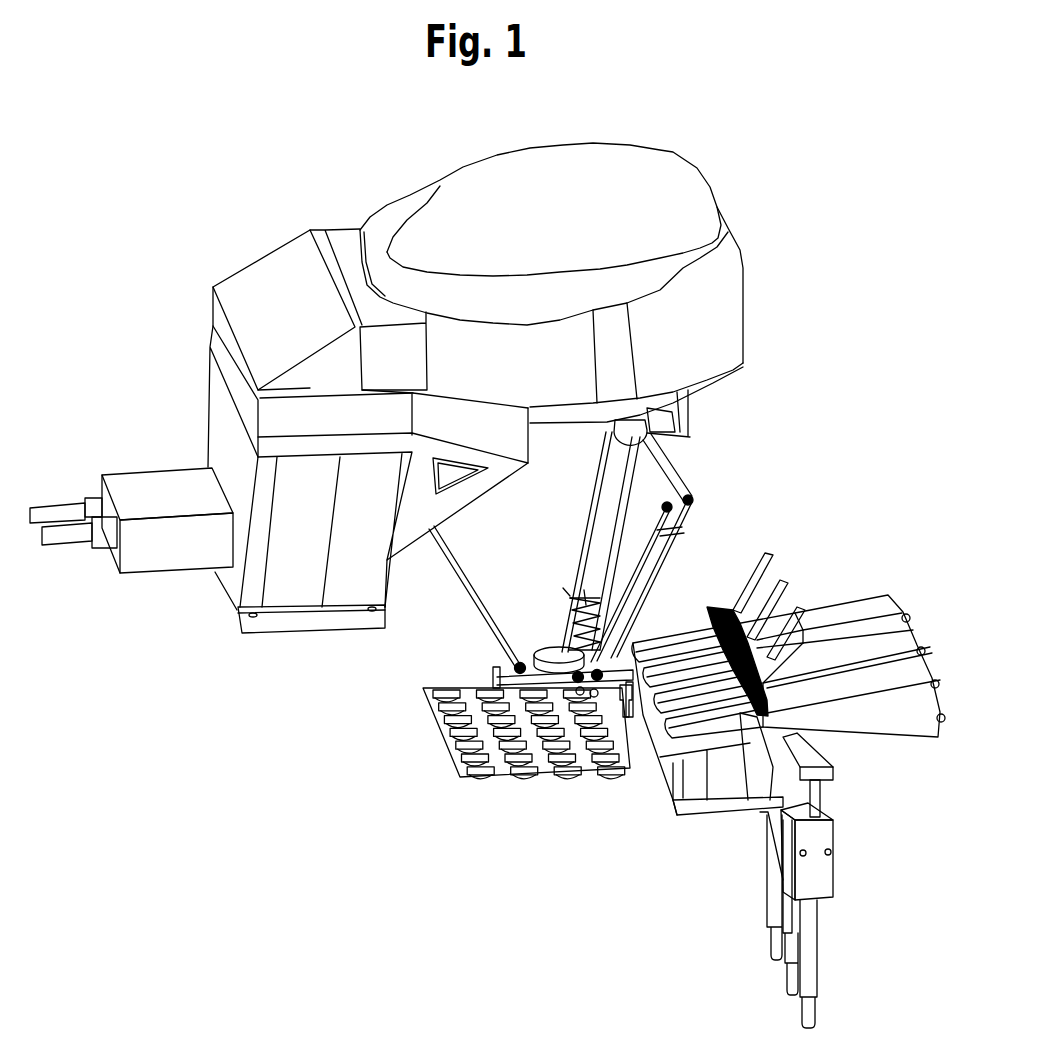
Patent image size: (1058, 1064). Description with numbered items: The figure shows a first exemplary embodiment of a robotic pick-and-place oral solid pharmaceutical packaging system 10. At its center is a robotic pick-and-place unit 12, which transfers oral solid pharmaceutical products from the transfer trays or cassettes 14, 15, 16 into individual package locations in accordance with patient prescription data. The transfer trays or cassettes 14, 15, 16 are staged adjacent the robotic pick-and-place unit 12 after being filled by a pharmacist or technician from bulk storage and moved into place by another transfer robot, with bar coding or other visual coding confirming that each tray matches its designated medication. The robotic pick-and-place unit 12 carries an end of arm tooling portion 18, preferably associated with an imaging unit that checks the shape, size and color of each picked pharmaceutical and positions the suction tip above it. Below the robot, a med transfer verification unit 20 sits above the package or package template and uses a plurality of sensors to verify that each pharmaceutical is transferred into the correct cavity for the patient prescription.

The robotic pick-and-place oral solid pharmaceutical packaging system 10 is at (264, 189).
The robotic pick-and-place unit 12 is at (653, 172).
The transfer tray or cassette 14 is at (885, 735).
The transfer tray or cassette 15 is at (837, 653).
The transfer tray or cassette 16 is at (858, 603).
The end of arm tooling portion 18 is at (496, 666).
The med transfer verification unit 20 is at (430, 707).